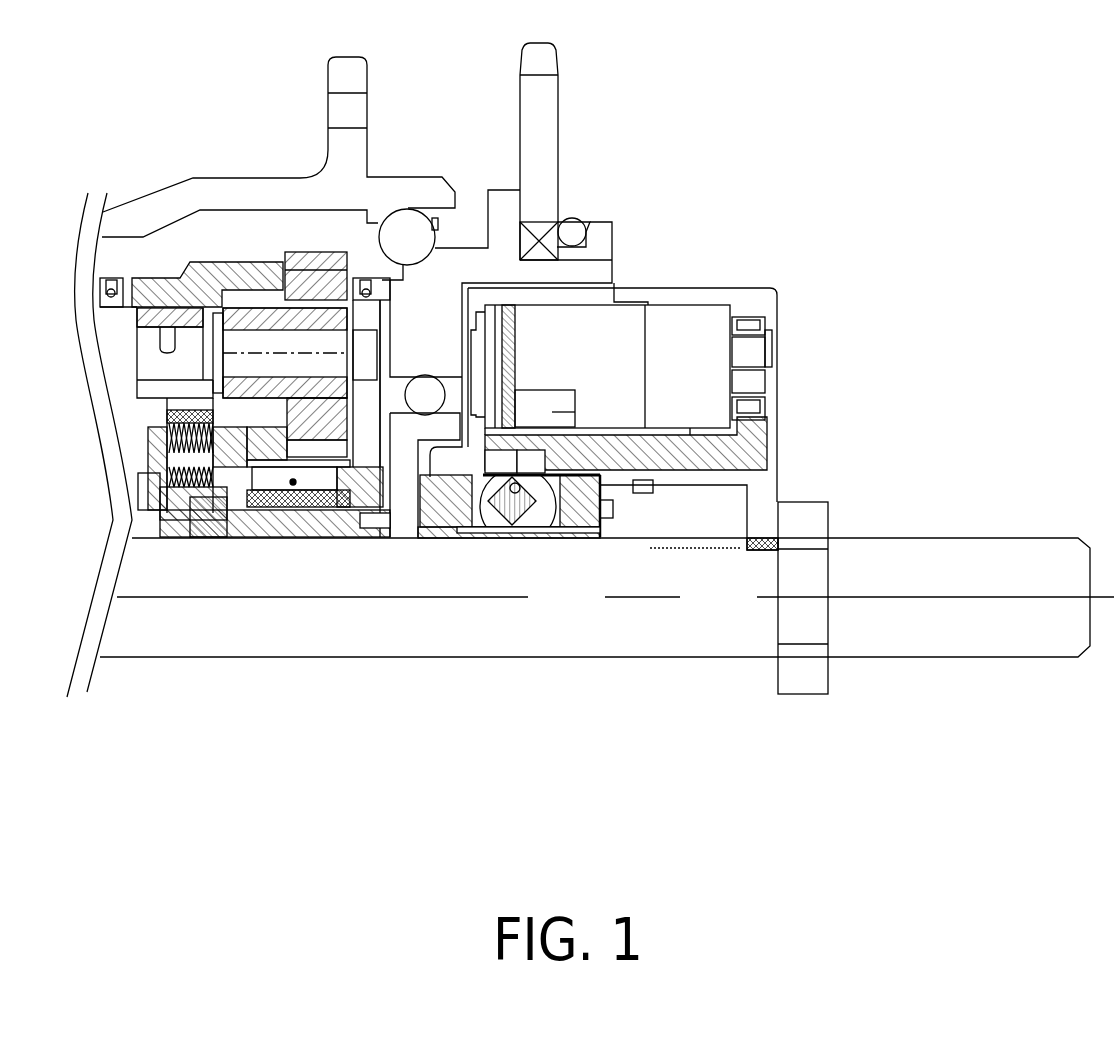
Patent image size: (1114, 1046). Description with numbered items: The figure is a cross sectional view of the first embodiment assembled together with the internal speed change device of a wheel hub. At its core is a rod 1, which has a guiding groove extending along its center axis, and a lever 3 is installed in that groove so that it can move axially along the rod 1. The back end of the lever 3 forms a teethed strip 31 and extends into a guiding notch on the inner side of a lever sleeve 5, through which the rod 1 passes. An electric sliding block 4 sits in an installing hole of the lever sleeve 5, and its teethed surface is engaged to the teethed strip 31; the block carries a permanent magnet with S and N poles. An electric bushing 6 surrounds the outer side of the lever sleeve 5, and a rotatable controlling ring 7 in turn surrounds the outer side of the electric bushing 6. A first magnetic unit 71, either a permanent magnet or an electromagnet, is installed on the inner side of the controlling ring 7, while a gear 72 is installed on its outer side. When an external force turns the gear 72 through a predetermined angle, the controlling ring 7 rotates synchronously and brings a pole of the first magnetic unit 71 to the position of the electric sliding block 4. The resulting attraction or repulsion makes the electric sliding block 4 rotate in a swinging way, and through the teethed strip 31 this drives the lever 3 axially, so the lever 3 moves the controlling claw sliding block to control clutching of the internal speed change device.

The rod 1 is at (400, 658).
The lever 3 is at (442, 540).
The teethed strip 31 is at (488, 535).
The electric sliding block 4 is at (518, 490).
The lever sleeve 5 is at (587, 530).
The electric bushing 6 is at (605, 493).
The controlling ring 7 is at (757, 450).
The first magnetic unit 71 is at (532, 455).
The gear 72 is at (760, 405).